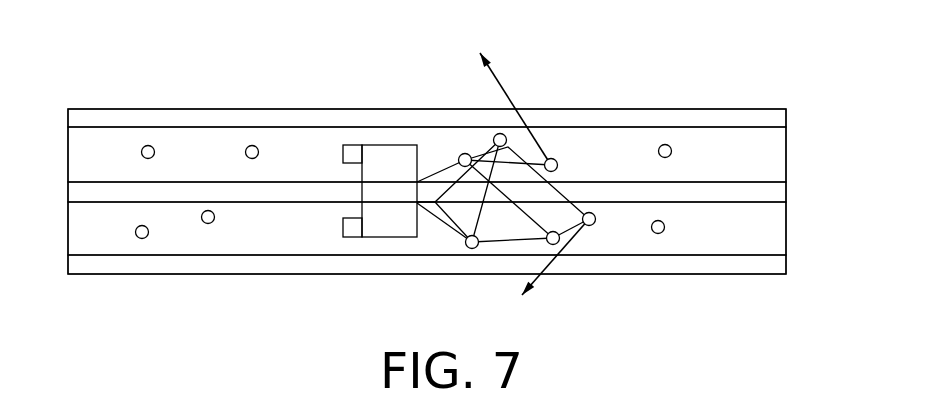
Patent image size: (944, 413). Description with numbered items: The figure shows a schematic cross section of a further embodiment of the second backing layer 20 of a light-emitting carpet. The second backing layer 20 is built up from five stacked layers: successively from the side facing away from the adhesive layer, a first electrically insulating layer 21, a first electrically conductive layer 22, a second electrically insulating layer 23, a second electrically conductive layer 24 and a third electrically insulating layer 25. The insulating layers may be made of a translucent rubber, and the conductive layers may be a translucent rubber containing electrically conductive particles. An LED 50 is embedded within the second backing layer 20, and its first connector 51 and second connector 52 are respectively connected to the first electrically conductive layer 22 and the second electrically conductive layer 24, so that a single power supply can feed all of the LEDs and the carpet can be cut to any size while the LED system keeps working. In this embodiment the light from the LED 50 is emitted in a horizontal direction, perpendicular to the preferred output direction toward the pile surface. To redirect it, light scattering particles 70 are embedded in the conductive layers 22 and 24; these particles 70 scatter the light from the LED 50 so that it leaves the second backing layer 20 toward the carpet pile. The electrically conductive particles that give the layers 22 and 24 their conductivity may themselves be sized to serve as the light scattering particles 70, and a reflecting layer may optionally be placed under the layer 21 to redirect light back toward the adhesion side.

The second backing layer 20 is at (116, 64).
The first electrically insulating layer 21 is at (784, 265).
The first electrically conductive layer 22 is at (784, 225).
The second electrically insulating layer 23 is at (784, 192).
The second electrically conductive layer 24 is at (784, 148).
The third electrically insulating layer 25 is at (784, 115).
The LED 50 is at (389, 222).
The first connector 51 is at (357, 228).
The second connector 52 is at (357, 155).
The light scattering particles 70 is at (658, 234).